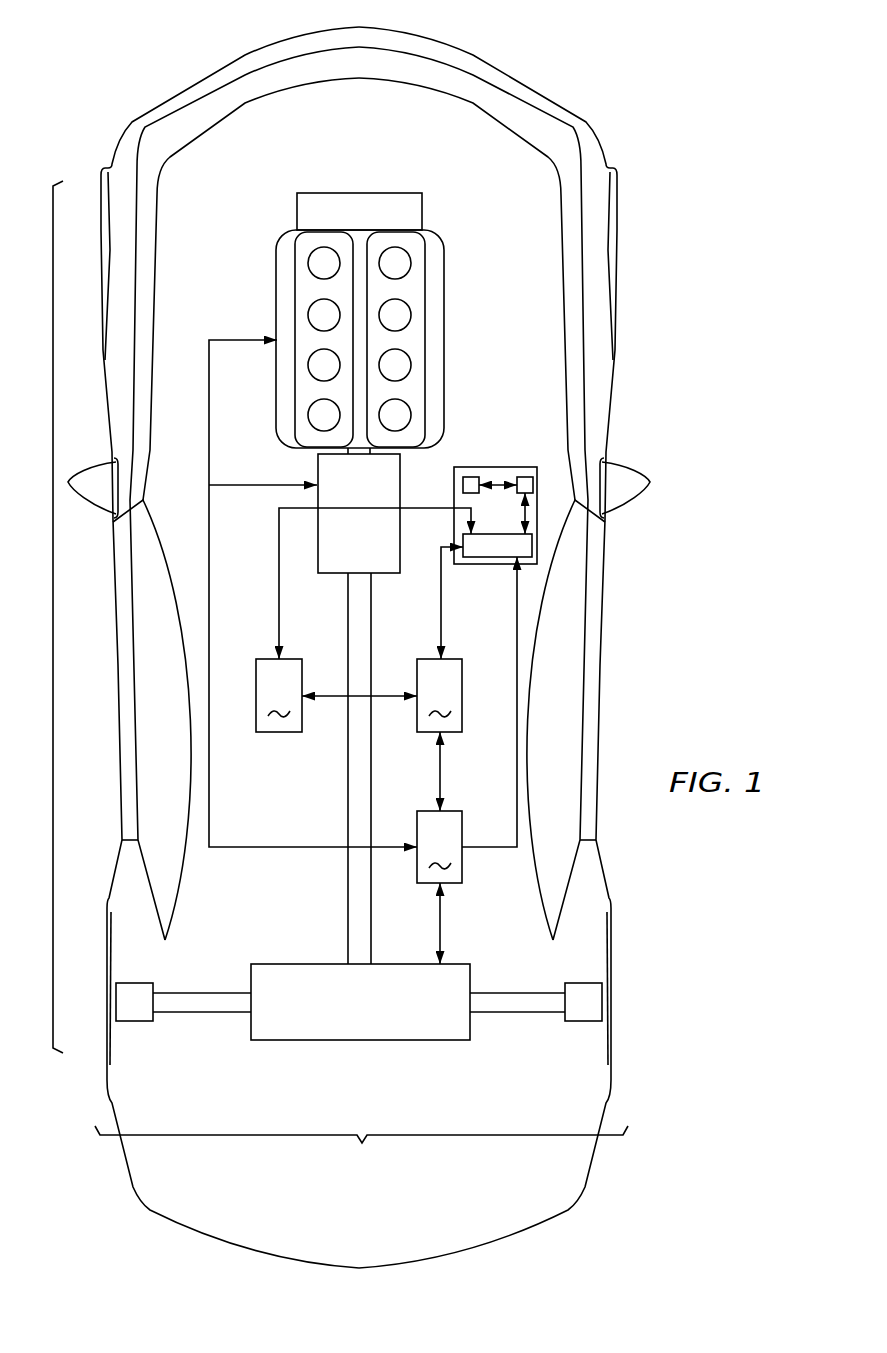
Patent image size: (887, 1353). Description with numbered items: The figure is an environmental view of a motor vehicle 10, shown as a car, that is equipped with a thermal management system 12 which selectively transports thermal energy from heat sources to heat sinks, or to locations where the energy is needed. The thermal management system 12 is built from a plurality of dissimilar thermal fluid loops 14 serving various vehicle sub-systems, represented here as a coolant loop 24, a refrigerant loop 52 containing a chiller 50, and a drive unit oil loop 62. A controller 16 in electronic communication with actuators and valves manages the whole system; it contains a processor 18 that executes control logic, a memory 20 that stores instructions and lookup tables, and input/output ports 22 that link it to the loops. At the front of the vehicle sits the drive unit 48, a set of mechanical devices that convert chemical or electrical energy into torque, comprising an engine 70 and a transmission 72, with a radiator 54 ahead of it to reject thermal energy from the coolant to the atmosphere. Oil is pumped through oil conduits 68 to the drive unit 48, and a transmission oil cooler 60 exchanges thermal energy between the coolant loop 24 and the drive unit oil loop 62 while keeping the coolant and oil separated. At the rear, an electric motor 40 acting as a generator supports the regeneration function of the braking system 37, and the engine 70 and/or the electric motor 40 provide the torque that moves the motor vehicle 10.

The motor vehicle 10 is at (650, 70).
The thermal management system 12 is at (41, 617).
The dissimilar thermal fluid loops 14 is at (388, 768).
The controller 16 is at (510, 477).
The processor 18 is at (529, 477).
The memory 20 is at (470, 477).
The input/output ports 22 is at (497, 557).
The coolant loop 24 is at (439, 695).
The braking system 37 is at (361, 1151).
The electric motor 40 is at (437, 1027).
The drive unit 48 is at (359, 637).
The chiller 50 is at (358, 696).
The refrigerant loop 52 is at (279, 695).
The radiator 54 is at (412, 200).
The transmission oil cooler 60 is at (441, 765).
The drive unit oil loop 62 is at (439, 847).
The oil conduits 68 is at (278, 848).
The engine 70 is at (437, 333).
The transmission 72 is at (317, 467).